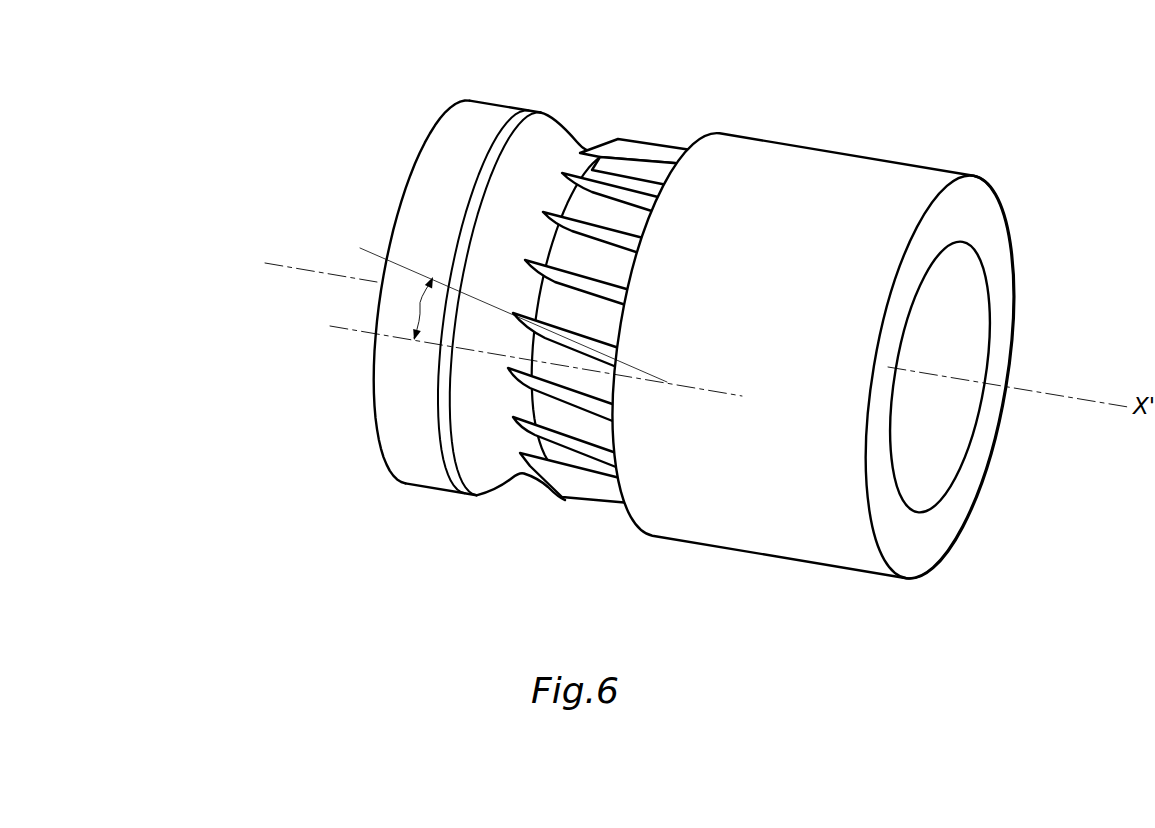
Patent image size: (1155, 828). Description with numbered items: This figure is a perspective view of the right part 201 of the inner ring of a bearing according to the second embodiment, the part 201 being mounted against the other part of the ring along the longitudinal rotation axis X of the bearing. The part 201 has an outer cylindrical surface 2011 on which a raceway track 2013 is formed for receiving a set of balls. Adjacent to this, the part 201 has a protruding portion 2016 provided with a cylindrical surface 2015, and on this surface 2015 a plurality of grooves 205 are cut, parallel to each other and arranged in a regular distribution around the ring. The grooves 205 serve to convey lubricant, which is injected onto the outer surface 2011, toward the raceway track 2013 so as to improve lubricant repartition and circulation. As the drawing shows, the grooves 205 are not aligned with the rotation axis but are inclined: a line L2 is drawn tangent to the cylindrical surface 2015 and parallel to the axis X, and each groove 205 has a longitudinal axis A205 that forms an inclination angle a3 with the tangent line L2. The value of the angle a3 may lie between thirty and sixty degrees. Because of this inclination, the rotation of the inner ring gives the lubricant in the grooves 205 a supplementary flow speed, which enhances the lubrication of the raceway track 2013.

The first part of inner ring 201 is at (707, 309).
The outer cylindrical surface 2011 is at (885, 188).
The raceway track 2013 is at (483, 447).
The cylindrical surface 2015 is at (614, 218).
The protruding portion 2016 is at (588, 302).
The grooves 205 is at (525, 260).
The longitudinal axis of grooves A205 is at (360, 248).
The inclination angle a3 is at (420, 307).
The tangent line L2 is at (698, 387).
The longitudinal rotation axis X is at (685, 328).